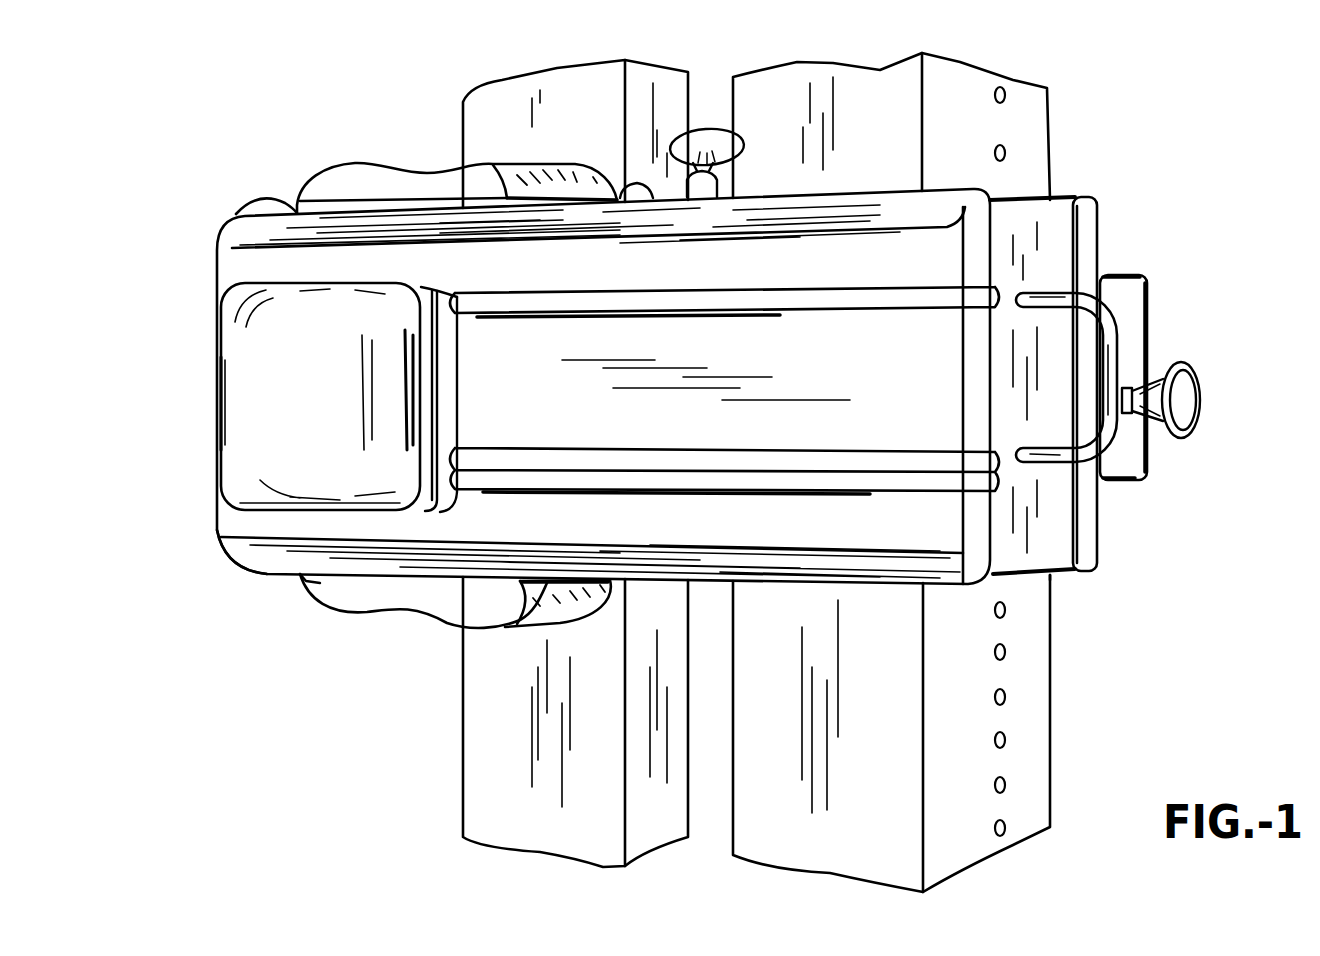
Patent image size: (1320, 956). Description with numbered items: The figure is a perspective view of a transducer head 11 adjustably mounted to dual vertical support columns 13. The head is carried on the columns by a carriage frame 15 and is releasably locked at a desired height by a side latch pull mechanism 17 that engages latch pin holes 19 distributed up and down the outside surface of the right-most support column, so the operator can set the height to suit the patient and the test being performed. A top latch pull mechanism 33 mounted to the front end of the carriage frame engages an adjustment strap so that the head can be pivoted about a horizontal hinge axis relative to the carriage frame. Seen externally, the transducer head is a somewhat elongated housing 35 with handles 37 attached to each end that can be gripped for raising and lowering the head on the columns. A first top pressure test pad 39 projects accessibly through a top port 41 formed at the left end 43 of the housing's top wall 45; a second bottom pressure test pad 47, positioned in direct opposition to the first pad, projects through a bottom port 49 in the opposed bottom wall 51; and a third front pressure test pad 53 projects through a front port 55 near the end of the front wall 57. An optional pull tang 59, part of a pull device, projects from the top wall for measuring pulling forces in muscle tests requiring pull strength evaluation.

The transducer head 11 is at (1137, 557).
The vertical support columns 13 is at (657, 83).
The carriage frame 15 is at (1127, 290).
The side latch pull mechanism 17 is at (1183, 400).
The latch pin holes 19 is at (1003, 697).
The top latch pull mechanism 33 is at (727, 150).
The housing 35 is at (923, 263).
The handles 37 is at (1110, 345).
The first top pressure test pad 39 is at (352, 175).
The top port 41 is at (303, 212).
The left end 43 is at (197, 288).
The top wall 45 is at (276, 210).
The second bottom pressure test pad 47 is at (357, 603).
The bottom port 49 is at (312, 574).
The bottom wall 51 is at (260, 573).
The third front pressure test pad 53 is at (240, 389).
The front port 55 is at (440, 370).
The front wall 57 is at (237, 518).
The pull tang 59 is at (635, 190).